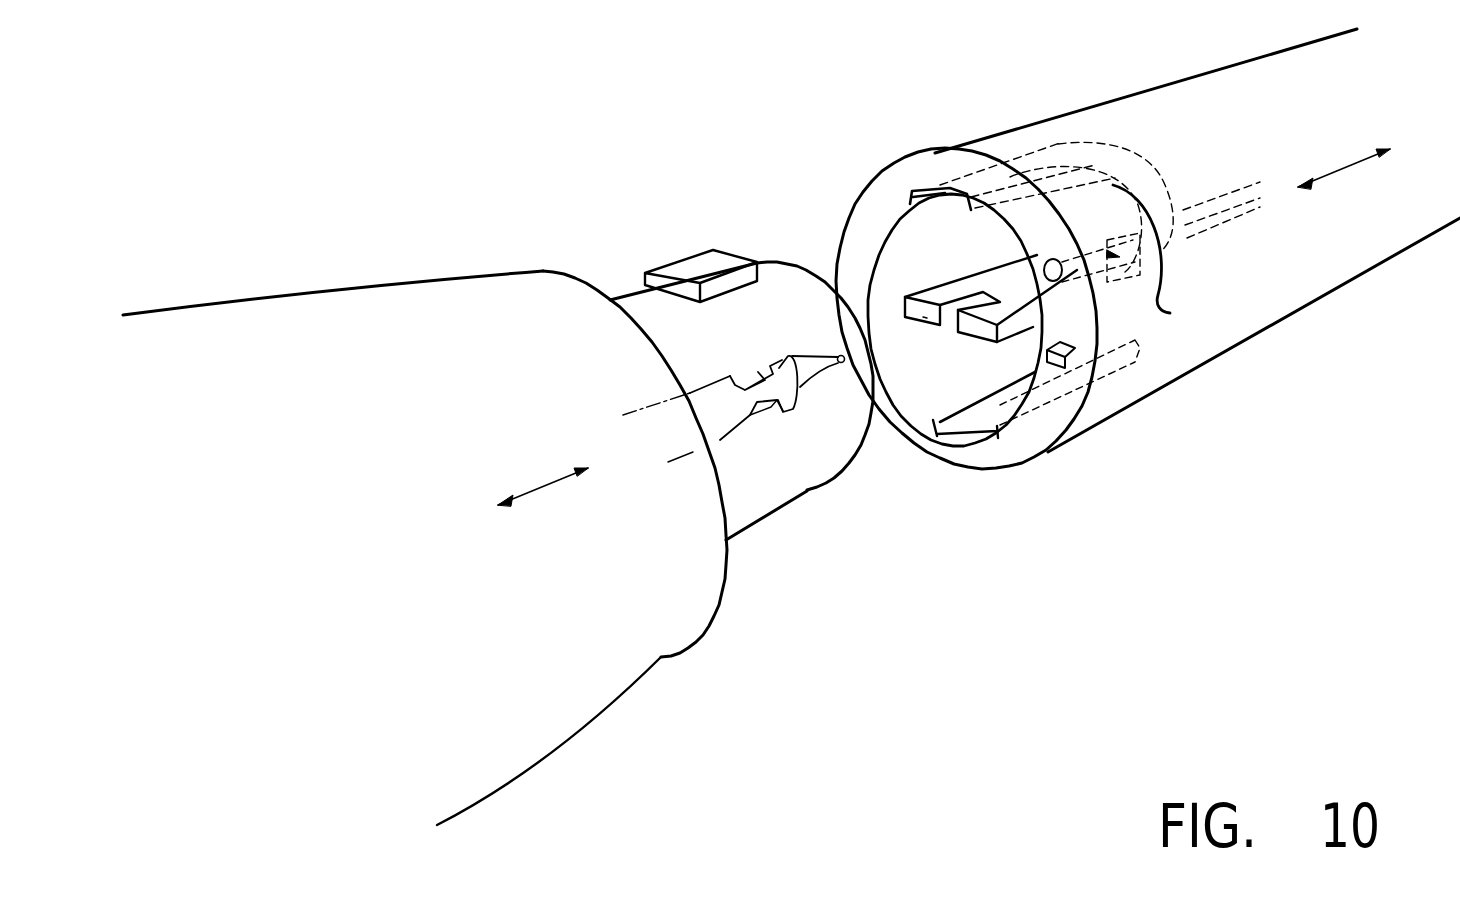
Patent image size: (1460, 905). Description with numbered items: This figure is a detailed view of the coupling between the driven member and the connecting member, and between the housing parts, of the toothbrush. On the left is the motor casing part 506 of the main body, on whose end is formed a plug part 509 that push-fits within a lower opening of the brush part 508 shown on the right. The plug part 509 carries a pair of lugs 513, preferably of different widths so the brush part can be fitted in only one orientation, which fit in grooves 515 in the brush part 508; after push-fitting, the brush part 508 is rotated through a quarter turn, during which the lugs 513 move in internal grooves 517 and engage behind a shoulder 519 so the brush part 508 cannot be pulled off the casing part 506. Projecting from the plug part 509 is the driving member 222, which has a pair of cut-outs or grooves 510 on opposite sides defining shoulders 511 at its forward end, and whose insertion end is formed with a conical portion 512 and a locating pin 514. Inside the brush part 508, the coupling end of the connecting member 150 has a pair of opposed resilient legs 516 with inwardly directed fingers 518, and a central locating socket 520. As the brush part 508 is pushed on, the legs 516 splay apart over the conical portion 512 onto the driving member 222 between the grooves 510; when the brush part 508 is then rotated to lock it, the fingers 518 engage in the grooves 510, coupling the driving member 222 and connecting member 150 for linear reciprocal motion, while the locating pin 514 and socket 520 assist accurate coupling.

The connecting member 150 is at (1203, 208).
The driving member 222 is at (677, 445).
The motor casing part 506 is at (640, 643).
The brush part 508 is at (1206, 388).
The plug part 509 is at (770, 262).
The grooves 510 is at (762, 403).
The shoulders 511 is at (765, 373).
The conical portion 512 is at (806, 385).
The lugs 513 is at (690, 267).
The locating pin 514 is at (843, 357).
The grooves 515 is at (905, 200).
The legs 516 is at (980, 275).
The internal grooves 517 is at (1160, 192).
The fingers 518 is at (927, 318).
The shoulder 519 is at (1175, 257).
The locating socket 520 is at (1061, 256).